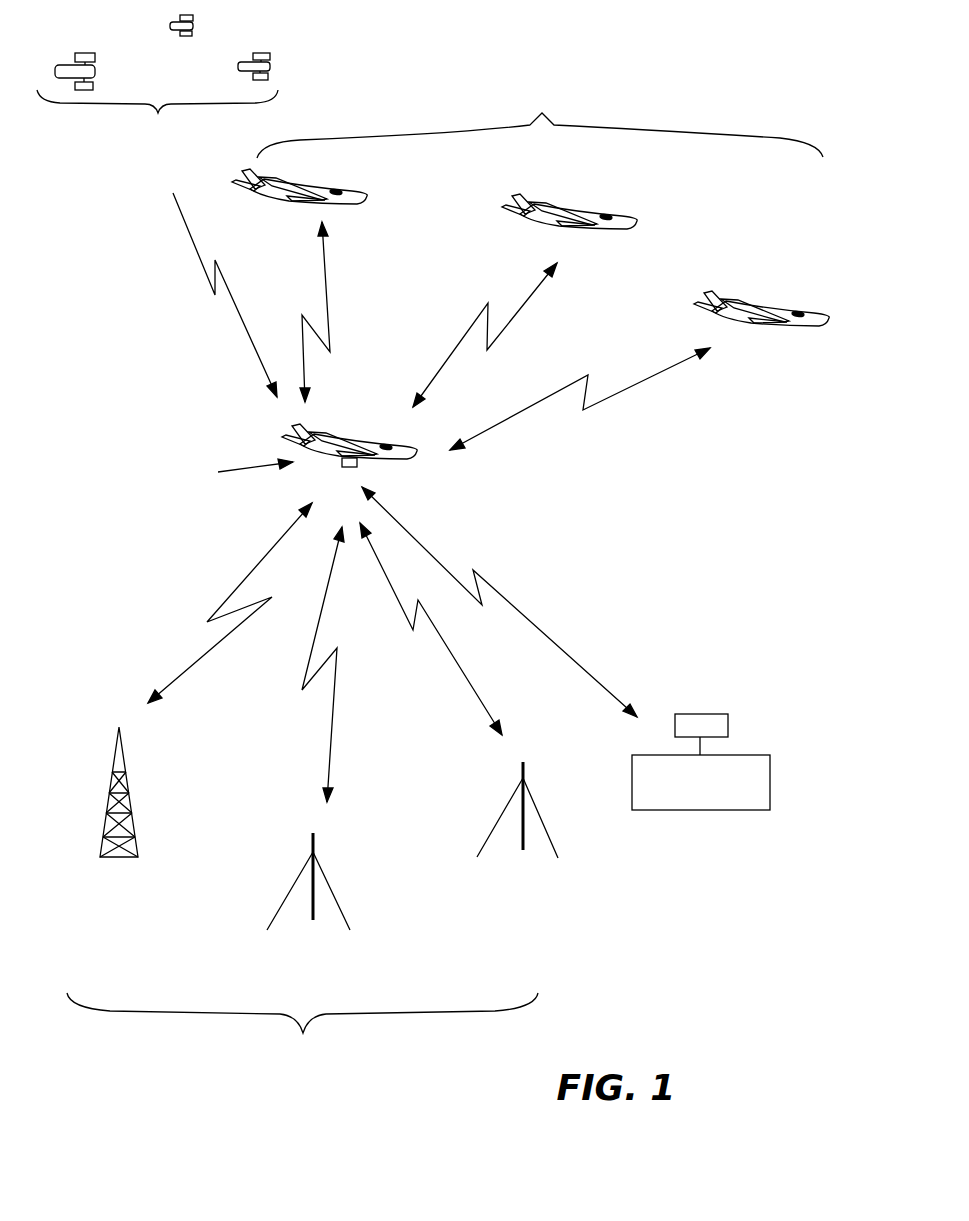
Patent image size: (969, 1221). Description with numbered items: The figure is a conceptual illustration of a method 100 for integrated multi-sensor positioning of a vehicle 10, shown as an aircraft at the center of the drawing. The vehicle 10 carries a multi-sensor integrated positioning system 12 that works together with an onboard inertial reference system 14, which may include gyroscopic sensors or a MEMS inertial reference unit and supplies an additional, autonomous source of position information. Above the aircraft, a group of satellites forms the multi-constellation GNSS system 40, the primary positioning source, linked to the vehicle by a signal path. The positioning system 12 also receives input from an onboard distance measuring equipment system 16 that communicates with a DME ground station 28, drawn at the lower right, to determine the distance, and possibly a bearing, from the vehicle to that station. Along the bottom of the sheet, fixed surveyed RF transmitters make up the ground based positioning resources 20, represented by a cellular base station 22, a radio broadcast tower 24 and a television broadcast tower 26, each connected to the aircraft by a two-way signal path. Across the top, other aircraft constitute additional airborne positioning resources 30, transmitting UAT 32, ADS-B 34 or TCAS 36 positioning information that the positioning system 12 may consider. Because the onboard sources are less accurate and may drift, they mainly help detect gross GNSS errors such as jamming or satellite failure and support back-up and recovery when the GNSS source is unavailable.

The method for integrated multi-sensor positioning 100 is at (705, 68).
The vehicle 10 is at (285, 438).
The multi-sensor integrated positioning system 12 is at (342, 465).
The onboard inertial reference system 14 is at (203, 479).
The onboard distance measuring equipment (DME) system 16 is at (499, 602).
The ground based positioning resources 20 is at (419, 800).
The cellular base stations 22 is at (121, 836).
The radio broadcast towers 24 is at (309, 914).
The television broadcast towers 26 is at (520, 839).
The DME ground stations 28 is at (701, 762).
The airborne positioning resources 30 is at (530, 195).
The UAT 32 is at (296, 312).
The ADS-B 34 is at (485, 331).
The TCAS 36 is at (580, 402).
The multi-constellation GNSS system 40 is at (157, 90).